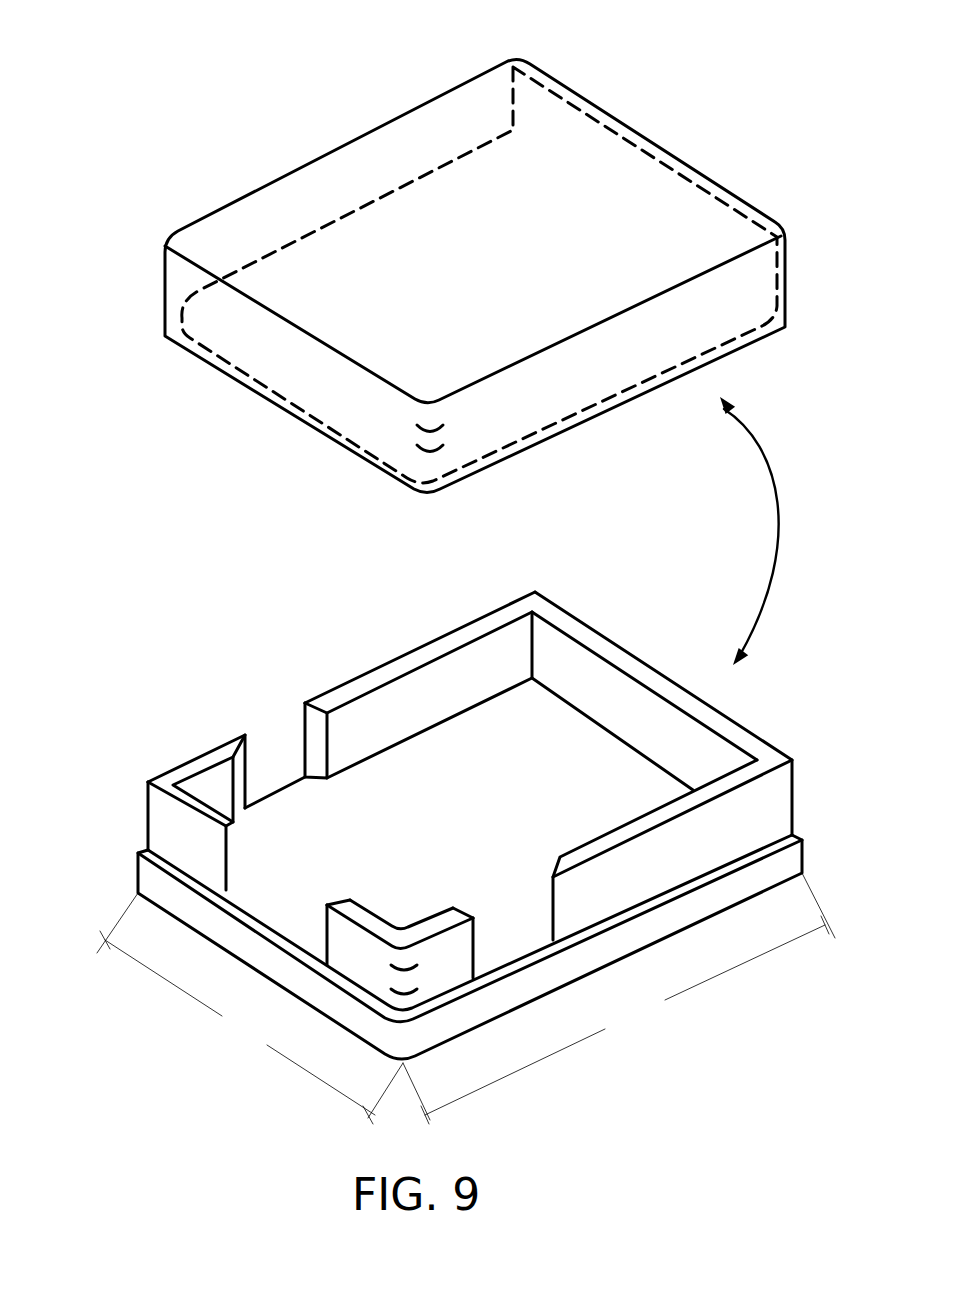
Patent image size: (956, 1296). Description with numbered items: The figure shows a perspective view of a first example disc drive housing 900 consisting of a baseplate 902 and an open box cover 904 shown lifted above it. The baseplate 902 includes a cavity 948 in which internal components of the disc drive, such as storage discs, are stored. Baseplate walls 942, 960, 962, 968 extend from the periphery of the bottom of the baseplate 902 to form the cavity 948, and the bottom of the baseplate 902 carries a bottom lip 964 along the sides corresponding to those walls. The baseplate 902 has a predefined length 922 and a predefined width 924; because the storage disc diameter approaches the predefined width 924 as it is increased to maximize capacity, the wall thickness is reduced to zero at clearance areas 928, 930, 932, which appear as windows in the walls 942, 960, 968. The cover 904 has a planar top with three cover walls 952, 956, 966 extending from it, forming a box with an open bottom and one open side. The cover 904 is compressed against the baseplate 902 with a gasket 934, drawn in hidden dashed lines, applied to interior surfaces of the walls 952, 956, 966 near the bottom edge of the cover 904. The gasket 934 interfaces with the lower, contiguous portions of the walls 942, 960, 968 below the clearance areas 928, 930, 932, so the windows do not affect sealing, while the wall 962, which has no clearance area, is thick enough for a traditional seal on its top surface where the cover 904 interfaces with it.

The disc drive housing 900 is at (114, 82).
The open box cover 904 is at (490, 280).
The cover wall 966 is at (360, 185).
The cover wall 956 is at (330, 392).
The cover wall 952 is at (618, 380).
The gasket 934 is at (748, 333).
The baseplate 902 is at (500, 832).
The baseplate wall 960 is at (348, 680).
The baseplate wall 962 is at (650, 665).
The baseplate wall 942 is at (668, 877).
The baseplate wall 968 is at (203, 858).
The bottom lip 964 is at (707, 885).
The clearance area 928 is at (288, 763).
The clearance area 930 is at (273, 898).
The clearance area 932 is at (510, 905).
The cavity 948 is at (548, 743).
The predefined length 922 is at (655, 1027).
The predefined width 924 is at (256, 1039).